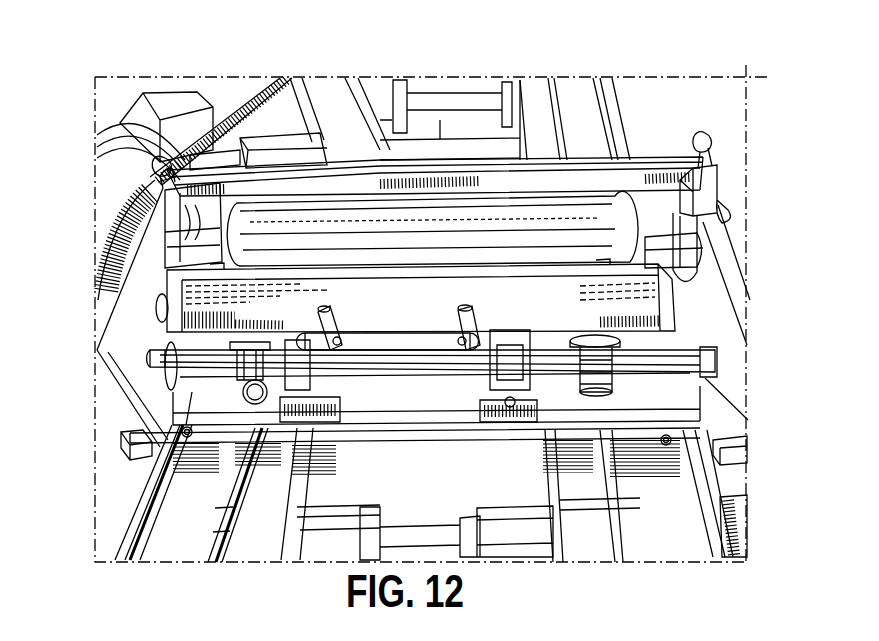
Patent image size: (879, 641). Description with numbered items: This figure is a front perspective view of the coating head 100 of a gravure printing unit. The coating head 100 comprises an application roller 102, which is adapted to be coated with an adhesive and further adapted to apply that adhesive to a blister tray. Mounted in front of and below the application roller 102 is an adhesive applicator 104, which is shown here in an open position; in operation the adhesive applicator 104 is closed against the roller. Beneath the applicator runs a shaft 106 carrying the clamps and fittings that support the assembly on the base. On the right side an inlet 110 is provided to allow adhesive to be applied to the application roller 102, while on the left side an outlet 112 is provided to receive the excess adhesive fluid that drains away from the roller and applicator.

The coating head 100 is at (423, 320).
The application roller 102 is at (540, 235).
The adhesive applicator 104 is at (460, 283).
The shaft 106 is at (433, 347).
The inlet 110 is at (618, 365).
The outlet 112 is at (237, 369).